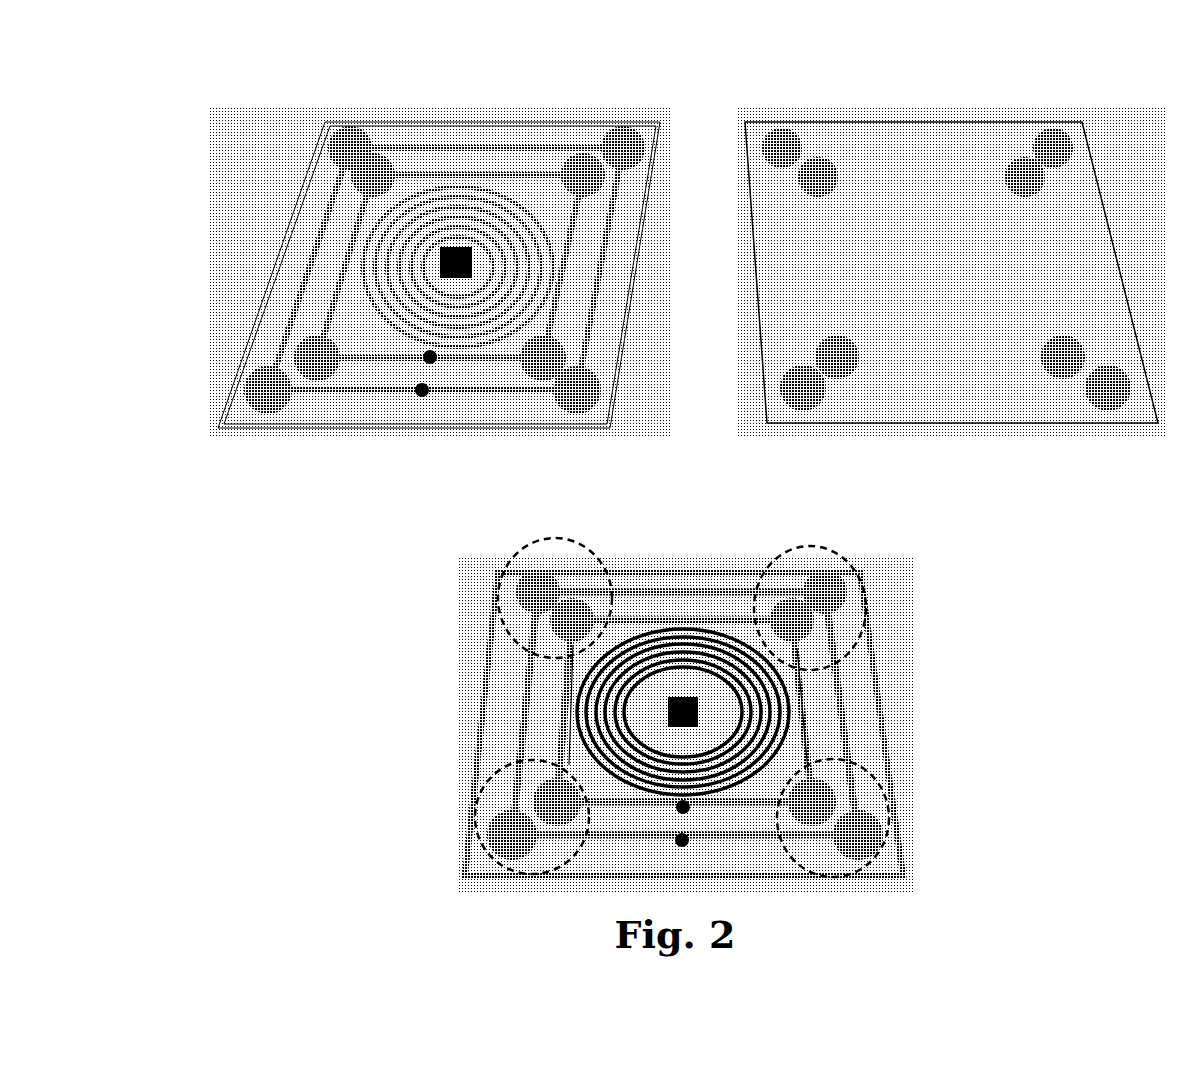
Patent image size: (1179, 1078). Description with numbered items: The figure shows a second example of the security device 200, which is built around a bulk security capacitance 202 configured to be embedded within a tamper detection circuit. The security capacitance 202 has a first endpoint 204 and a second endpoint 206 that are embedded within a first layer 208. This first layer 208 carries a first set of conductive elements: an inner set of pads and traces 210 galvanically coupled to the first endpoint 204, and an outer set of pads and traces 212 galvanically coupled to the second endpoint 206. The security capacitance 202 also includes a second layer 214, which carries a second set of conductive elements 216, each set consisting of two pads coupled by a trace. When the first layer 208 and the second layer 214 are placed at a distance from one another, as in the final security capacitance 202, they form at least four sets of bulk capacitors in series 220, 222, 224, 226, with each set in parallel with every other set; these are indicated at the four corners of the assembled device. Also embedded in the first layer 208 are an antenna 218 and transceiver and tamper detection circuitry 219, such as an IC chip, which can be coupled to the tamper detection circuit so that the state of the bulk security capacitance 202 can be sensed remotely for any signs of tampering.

The security device 200 is at (157, 122).
The bulk security capacitance 202 is at (682, 555).
The first endpoint 204 is at (417, 362).
The second endpoint 206 is at (415, 402).
The first layer 208 is at (437, 105).
The inner set of pads and traces 210 is at (347, 262).
The outer set of pads and traces 212 is at (335, 185).
The second layer 214 is at (922, 105).
The second set of conductive elements 216 is at (1080, 367).
The antenna 218 is at (413, 276).
The transceiver and tamper detection circuitry 219 is at (462, 282).
The set of bulk capacitors in series 220 is at (502, 607).
The set of bulk capacitors in series 222 is at (482, 803).
The set of bulk capacitors in series 224 is at (868, 600).
The set of bulk capacitors in series 226 is at (888, 808).